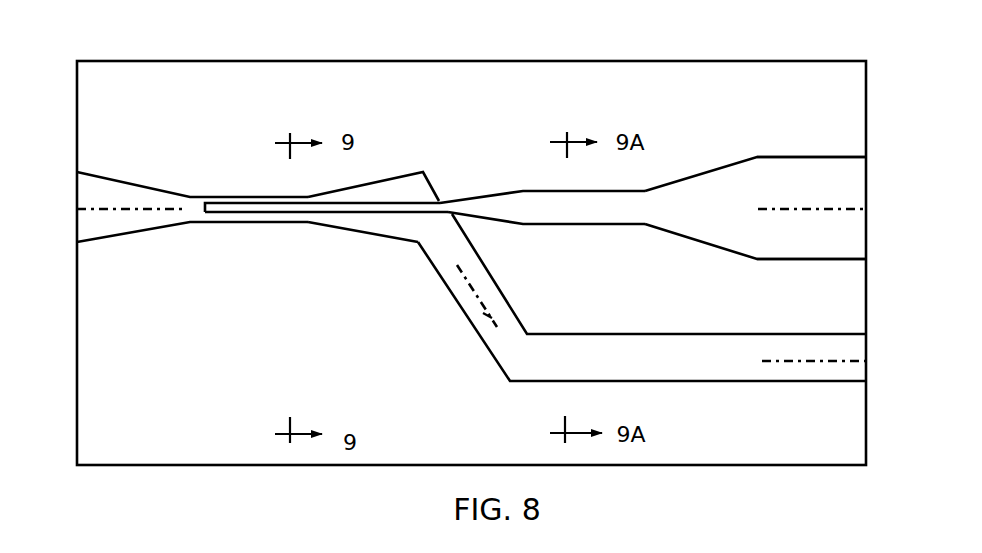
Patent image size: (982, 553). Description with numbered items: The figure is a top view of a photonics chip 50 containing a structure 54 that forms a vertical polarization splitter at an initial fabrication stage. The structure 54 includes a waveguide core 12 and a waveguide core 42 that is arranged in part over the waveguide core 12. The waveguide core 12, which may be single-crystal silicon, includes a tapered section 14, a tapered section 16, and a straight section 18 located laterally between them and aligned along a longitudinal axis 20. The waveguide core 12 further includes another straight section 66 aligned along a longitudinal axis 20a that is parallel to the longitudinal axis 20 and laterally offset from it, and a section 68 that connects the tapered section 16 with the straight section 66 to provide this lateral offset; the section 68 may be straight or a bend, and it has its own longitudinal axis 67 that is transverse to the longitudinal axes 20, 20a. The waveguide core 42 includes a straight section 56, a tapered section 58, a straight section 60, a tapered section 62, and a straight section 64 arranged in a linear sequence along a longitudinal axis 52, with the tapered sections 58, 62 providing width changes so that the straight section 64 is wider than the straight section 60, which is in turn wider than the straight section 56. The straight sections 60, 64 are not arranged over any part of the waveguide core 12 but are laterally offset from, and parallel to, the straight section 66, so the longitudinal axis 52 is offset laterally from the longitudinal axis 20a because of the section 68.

The photonics chip 50 is at (115, 33).
The waveguide core 12 is at (380, 238).
The tapered section 14 is at (142, 197).
The tapered section 16 is at (380, 190).
The straight section 18 is at (248, 216).
The longitudinal axis 20 is at (110, 209).
The longitudinal axis 20a is at (803, 363).
The waveguide core 42 is at (628, 225).
The longitudinal axis 52 is at (833, 209).
The structure 54 is at (222, 327).
The straight section 56 is at (238, 209).
The tapered section 58 is at (477, 203).
The straight section 60 is at (565, 210).
The tapered section 62 is at (713, 192).
The straight section 64 is at (810, 188).
The straight section 66 is at (703, 370).
The longitudinal axis 67 is at (488, 313).
The section 68 is at (448, 278).